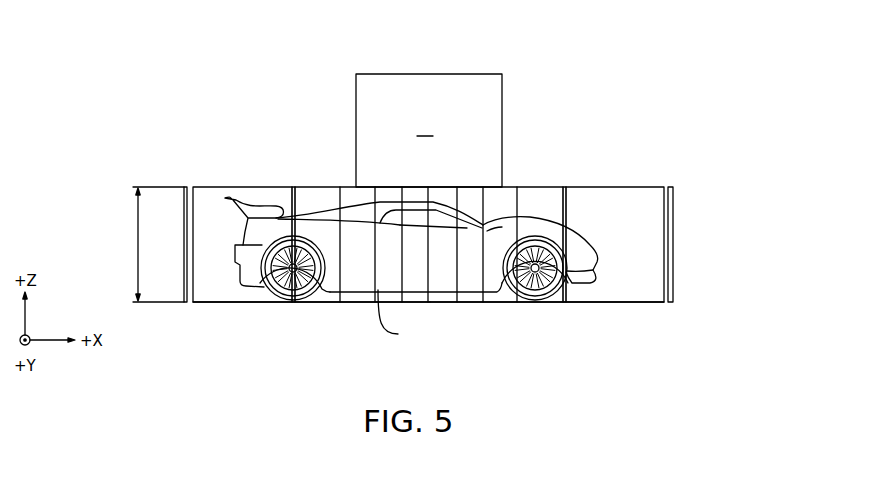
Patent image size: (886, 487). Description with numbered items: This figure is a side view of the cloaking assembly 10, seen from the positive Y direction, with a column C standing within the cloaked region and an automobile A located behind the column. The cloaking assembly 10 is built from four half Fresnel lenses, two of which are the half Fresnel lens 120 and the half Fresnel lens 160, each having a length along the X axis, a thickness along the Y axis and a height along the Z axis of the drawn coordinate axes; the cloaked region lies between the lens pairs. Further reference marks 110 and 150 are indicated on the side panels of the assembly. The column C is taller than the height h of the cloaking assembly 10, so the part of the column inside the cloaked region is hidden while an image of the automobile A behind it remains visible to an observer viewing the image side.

The cloaking assembly 10 is at (672, 122).
The first side panel 110 is at (681, 190).
The half Fresnel lens 120 is at (638, 309).
The second side panel 150 is at (184, 182).
The half Fresnel lens 160 is at (218, 309).